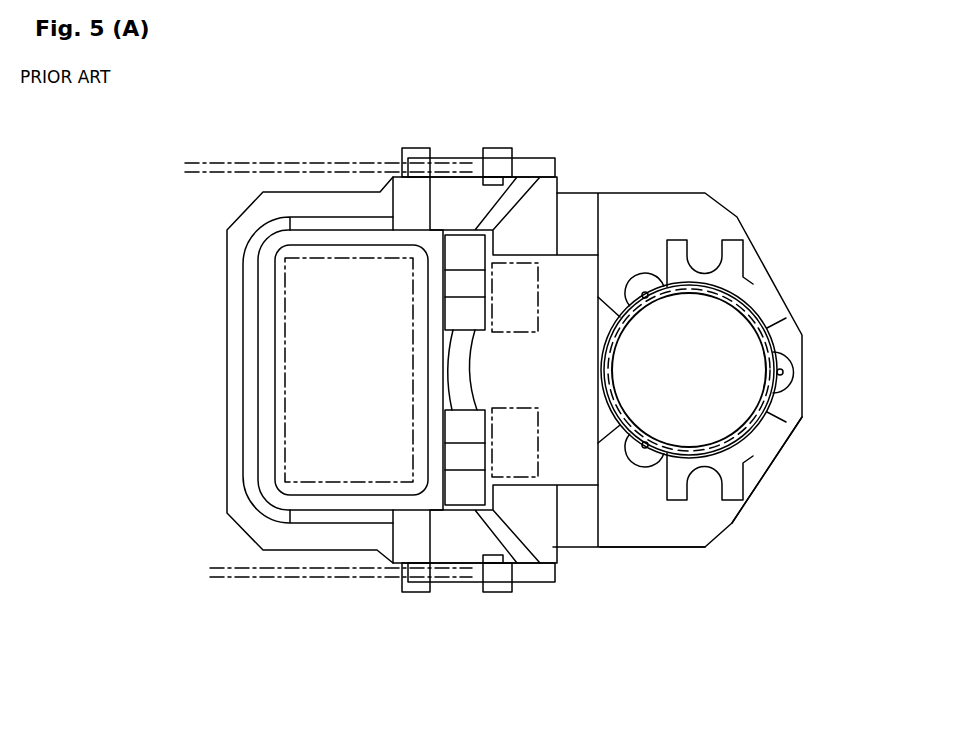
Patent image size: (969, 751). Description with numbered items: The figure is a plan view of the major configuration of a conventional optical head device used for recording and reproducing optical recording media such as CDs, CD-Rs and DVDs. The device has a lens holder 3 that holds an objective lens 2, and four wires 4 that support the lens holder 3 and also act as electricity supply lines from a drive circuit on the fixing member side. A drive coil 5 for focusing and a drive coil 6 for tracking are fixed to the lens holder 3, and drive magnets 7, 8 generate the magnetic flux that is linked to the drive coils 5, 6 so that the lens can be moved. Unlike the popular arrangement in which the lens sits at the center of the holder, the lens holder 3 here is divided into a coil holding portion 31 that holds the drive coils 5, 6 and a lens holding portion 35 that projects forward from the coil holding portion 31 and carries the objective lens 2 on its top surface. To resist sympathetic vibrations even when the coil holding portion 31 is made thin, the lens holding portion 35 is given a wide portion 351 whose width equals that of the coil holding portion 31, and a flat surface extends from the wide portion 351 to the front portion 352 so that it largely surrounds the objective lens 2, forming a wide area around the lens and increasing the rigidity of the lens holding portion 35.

The objective lens 2 is at (728, 336).
The lens holder 3 is at (681, 138).
The coil holding portion 31 is at (460, 203).
The lens holding portion 35 is at (649, 214).
The wide portion 351 is at (695, 557).
The front portion 352 is at (806, 418).
The wires 4 is at (355, 158).
The drive coil 5 is at (265, 283).
The drive coil 6 is at (448, 437).
The drive magnet 7 is at (285, 313).
The drive magnet 8 is at (520, 420).